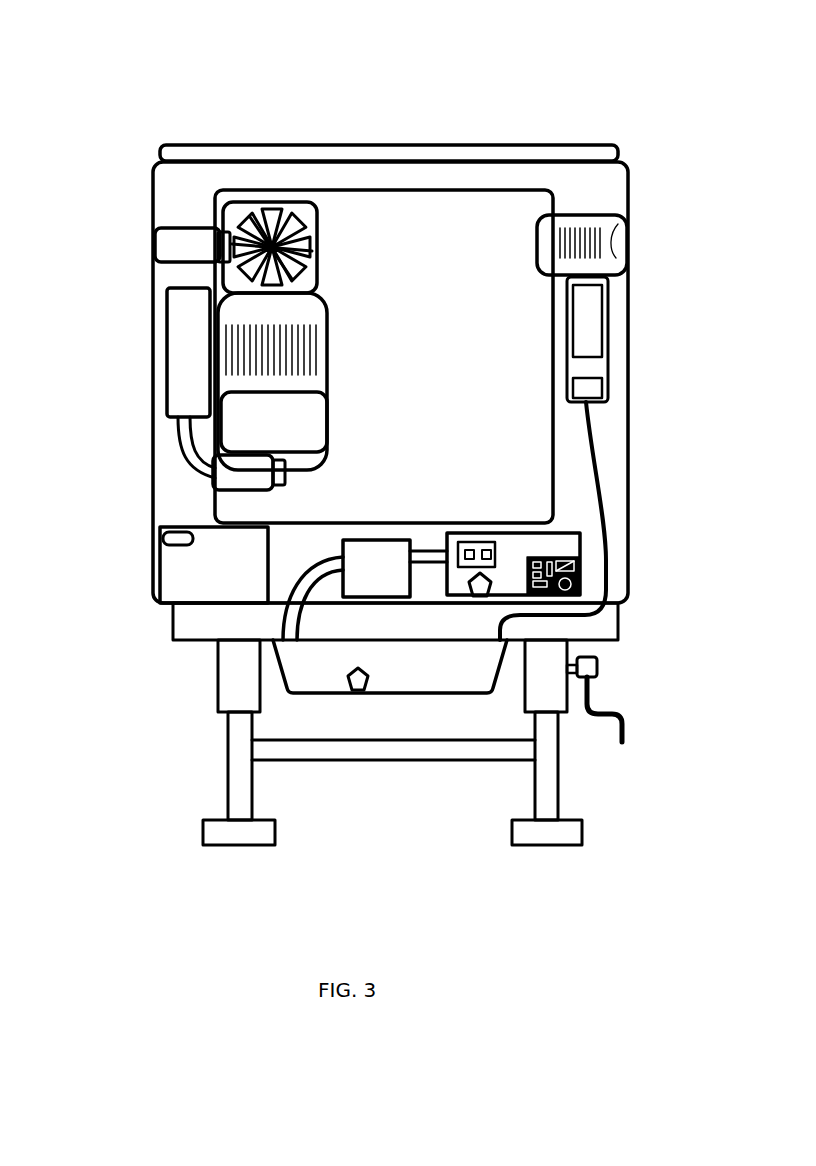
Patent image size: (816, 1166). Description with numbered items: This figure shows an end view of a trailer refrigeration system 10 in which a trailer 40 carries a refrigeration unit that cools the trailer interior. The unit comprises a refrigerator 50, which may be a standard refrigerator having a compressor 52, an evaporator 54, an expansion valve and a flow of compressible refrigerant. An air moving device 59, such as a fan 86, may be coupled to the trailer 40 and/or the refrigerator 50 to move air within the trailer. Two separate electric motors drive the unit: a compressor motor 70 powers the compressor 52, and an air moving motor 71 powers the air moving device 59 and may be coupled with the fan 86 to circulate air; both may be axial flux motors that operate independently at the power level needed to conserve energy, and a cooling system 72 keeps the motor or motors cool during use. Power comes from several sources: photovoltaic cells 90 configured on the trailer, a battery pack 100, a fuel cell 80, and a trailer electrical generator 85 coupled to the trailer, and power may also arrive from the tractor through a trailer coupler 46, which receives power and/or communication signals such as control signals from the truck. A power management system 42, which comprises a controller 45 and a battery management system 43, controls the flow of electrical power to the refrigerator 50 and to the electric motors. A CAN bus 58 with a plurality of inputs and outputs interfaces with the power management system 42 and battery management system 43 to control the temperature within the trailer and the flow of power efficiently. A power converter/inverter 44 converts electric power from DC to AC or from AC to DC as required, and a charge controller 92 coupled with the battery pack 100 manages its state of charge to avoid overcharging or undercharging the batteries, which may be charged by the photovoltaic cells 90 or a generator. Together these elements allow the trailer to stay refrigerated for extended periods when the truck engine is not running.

The trailer refrigeration system 10 is at (171, 122).
The trailer 40 is at (600, 197).
The power management system 42 is at (525, 560).
The battery management system 43 is at (355, 692).
The power converter/inverter 44 is at (377, 560).
The controller 45 is at (480, 597).
The trailer coupler 46 is at (475, 555).
The refrigerator 50 is at (295, 350).
The compressor 52 is at (302, 388).
The evaporator 54 is at (300, 428).
The CAN bus 58 is at (580, 575).
The air moving device 59 is at (298, 240).
The compressor motor 70 is at (225, 481).
The air moving motor 71 is at (185, 238).
The cooling system 72 is at (190, 345).
The fuel cell 80 is at (613, 225).
The trailer electrical generator 85 is at (190, 570).
The fan 86 is at (292, 275).
The photovoltaic cells 90 is at (520, 153).
The charge controller 92 is at (587, 300).
The battery pack 100 is at (395, 693).